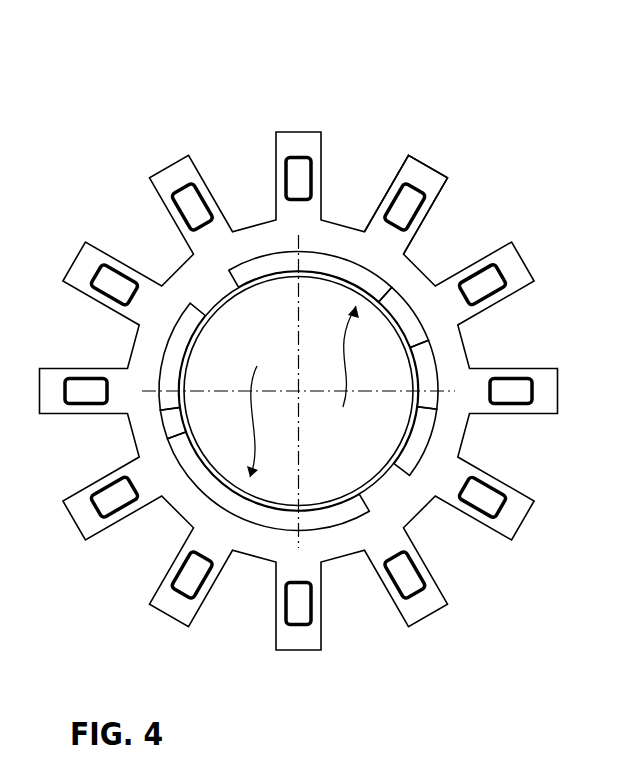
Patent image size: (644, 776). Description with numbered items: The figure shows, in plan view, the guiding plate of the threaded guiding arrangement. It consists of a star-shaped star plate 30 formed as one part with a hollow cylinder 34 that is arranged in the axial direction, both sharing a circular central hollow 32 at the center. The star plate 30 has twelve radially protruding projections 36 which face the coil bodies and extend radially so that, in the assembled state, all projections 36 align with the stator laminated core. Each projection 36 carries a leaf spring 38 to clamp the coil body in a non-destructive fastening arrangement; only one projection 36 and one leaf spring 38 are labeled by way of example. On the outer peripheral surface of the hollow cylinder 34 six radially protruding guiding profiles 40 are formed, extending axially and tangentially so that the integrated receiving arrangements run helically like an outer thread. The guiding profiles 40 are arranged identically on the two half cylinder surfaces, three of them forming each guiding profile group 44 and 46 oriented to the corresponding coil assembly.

The star plate 30 is at (176, 500).
The central hollow 32 is at (388, 400).
The hollow cylinder 34 is at (222, 301).
The projection 36 is at (433, 176).
The leaf spring 38 is at (405, 202).
The guiding profile 40 is at (387, 296).
The guiding profile group 44 is at (342, 375).
The guiding profile group 46 is at (260, 405).